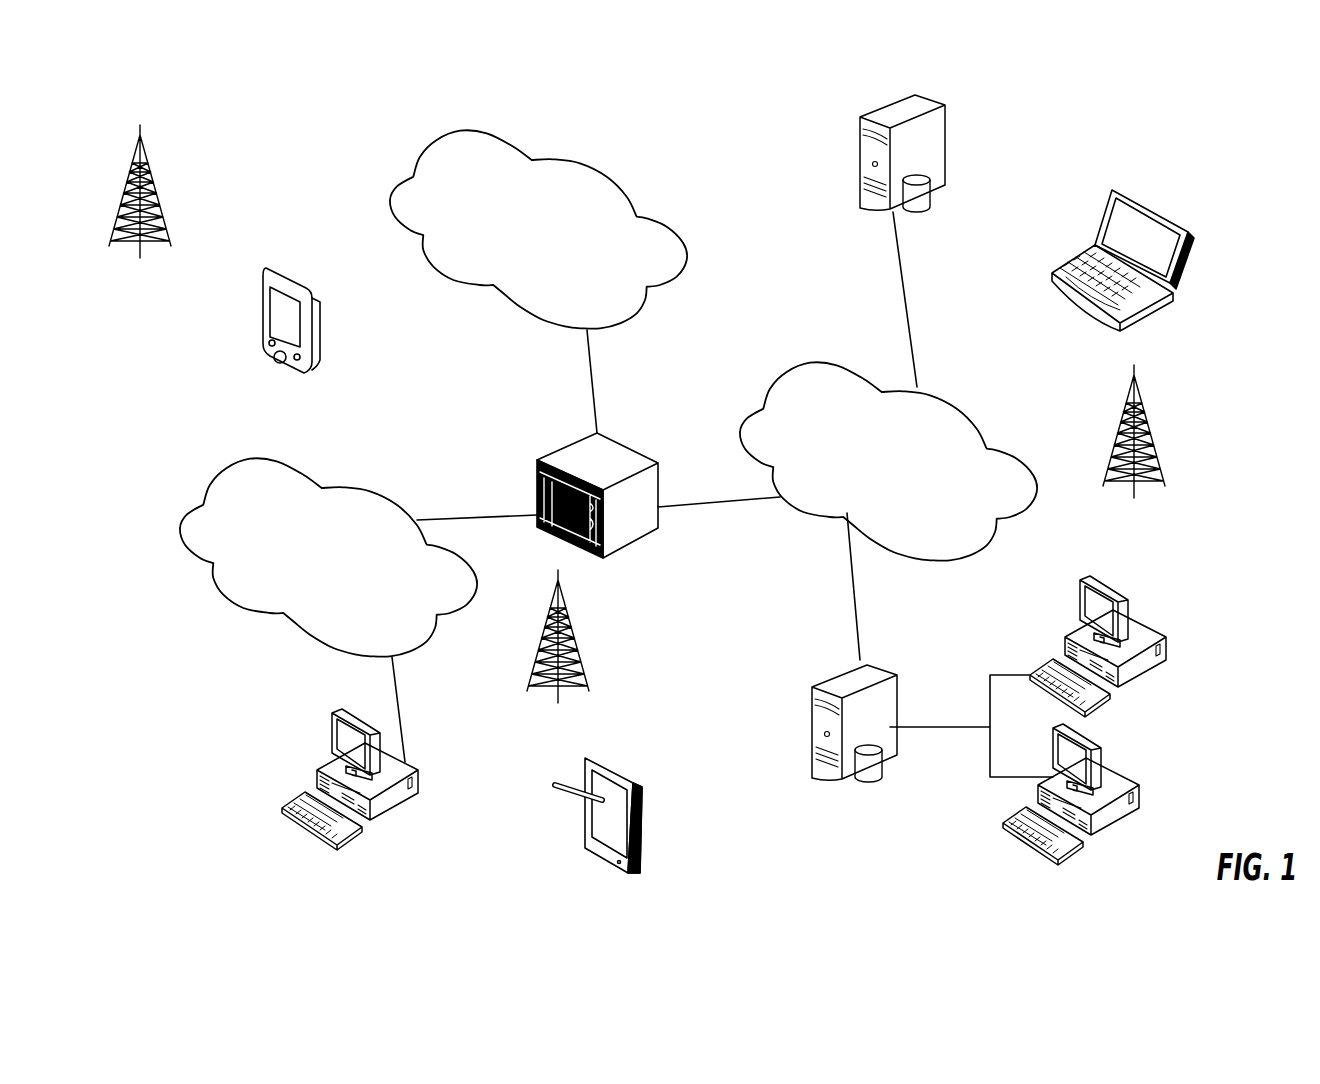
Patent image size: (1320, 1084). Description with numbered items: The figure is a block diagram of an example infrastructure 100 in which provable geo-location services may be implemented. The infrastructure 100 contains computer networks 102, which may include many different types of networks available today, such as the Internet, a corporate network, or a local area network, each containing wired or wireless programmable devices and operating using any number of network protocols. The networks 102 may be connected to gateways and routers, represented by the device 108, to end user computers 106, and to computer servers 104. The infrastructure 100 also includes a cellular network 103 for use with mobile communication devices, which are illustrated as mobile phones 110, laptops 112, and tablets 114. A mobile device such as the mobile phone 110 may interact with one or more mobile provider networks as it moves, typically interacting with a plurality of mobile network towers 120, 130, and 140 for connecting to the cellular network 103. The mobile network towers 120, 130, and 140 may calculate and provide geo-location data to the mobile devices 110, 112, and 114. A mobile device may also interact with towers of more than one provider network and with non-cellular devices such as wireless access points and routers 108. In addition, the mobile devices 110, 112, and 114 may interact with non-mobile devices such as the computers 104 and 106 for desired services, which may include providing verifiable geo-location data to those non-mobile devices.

The infrastructure 100 is at (1113, 137).
The computer networks 102 is at (1037, 390).
The cellular network 103 is at (641, 128).
The computer servers 104 is at (812, 693).
The end user computers 106 is at (1195, 730).
The gateways and routers 108 is at (681, 407).
The mobile phone 110 is at (355, 242).
The laptop 112 is at (1215, 187).
The tablet 114 is at (680, 735).
The mobile network tower 120 is at (558, 653).
The mobile network tower 130 is at (1134, 449).
The mobile network tower 140 is at (140, 208).